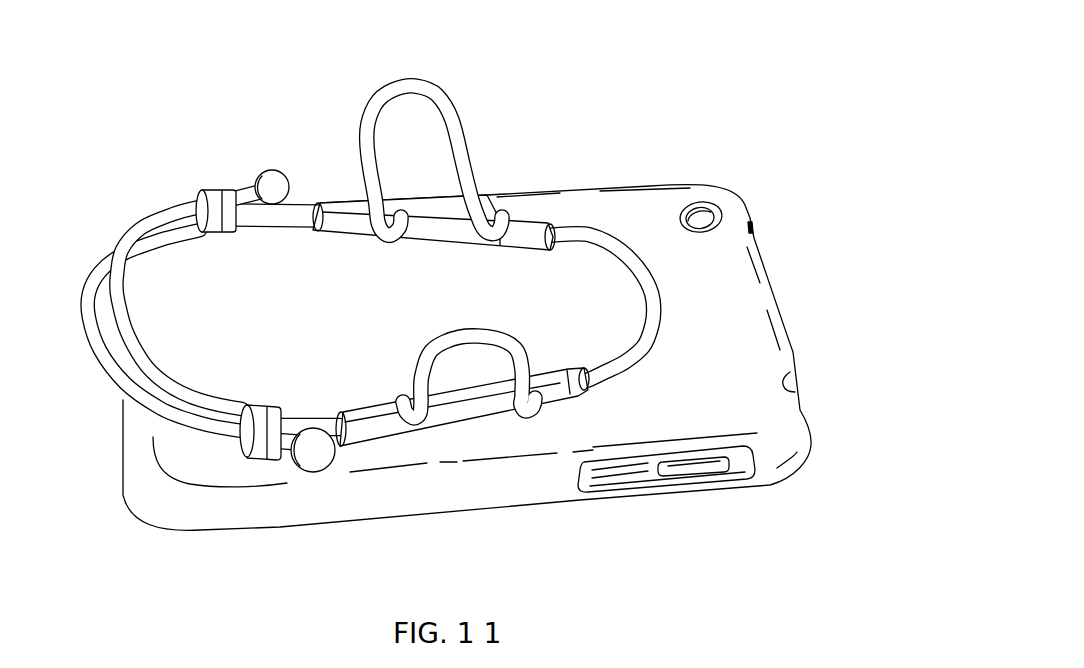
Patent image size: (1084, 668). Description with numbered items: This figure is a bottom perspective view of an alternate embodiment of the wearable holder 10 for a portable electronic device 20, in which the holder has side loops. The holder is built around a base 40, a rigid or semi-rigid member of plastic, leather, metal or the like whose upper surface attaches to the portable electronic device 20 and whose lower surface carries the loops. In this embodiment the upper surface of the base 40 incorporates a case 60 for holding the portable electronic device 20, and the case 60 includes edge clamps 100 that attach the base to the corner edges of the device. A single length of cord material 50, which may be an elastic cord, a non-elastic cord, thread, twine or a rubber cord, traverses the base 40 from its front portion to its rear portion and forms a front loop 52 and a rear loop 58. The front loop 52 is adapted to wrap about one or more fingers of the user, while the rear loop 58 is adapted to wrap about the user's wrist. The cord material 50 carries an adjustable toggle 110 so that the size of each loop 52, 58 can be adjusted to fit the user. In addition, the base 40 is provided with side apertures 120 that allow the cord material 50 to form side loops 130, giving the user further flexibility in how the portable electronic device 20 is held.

The wearable holder 10 is at (667, 59).
The portable electronic device 20 is at (648, 477).
The base 40 is at (520, 217).
The cord material 50 is at (288, 231).
The front loop 52 is at (660, 306).
The rear loop 58 is at (80, 320).
The case 60 is at (770, 305).
The edge clamps 100 is at (540, 494).
The adjustable toggle 110 is at (217, 185).
The side apertures 120 is at (433, 227).
The side loops 130 is at (434, 78).